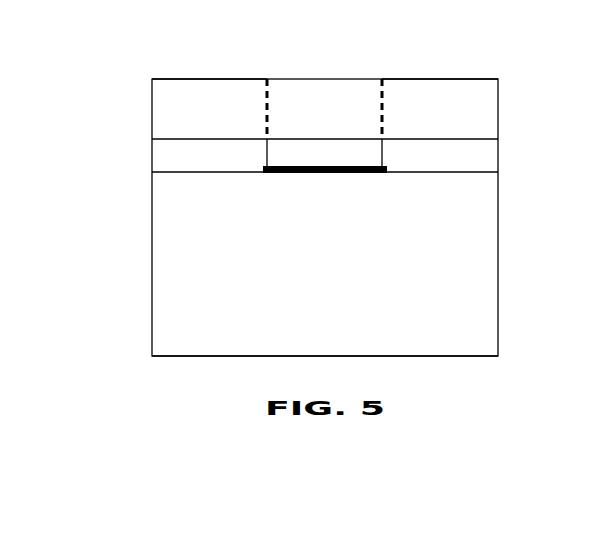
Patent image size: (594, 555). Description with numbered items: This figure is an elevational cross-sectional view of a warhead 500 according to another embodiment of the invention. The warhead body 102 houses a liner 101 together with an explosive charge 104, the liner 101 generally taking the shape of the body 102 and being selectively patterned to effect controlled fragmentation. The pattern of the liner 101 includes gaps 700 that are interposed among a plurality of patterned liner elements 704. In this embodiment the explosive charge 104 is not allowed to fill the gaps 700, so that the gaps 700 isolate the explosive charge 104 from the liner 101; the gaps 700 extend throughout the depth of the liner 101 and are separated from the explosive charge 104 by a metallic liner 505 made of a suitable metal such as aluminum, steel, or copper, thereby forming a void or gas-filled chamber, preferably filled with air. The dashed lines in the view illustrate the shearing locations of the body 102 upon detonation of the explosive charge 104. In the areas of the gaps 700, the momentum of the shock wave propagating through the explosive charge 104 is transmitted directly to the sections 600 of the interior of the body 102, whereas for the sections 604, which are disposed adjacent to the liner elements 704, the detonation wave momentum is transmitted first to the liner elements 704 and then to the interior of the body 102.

The warhead 500 is at (297, 49).
The body 102 is at (152, 112).
The liner 101 is at (151, 155).
The explosive charge 104 is at (343, 294).
The sections 604 is at (180, 95).
The sections 600 is at (343, 102).
The liner elements 704 is at (488, 157).
The gaps 700 is at (409, 200).
The metallic liner 505 is at (232, 215).